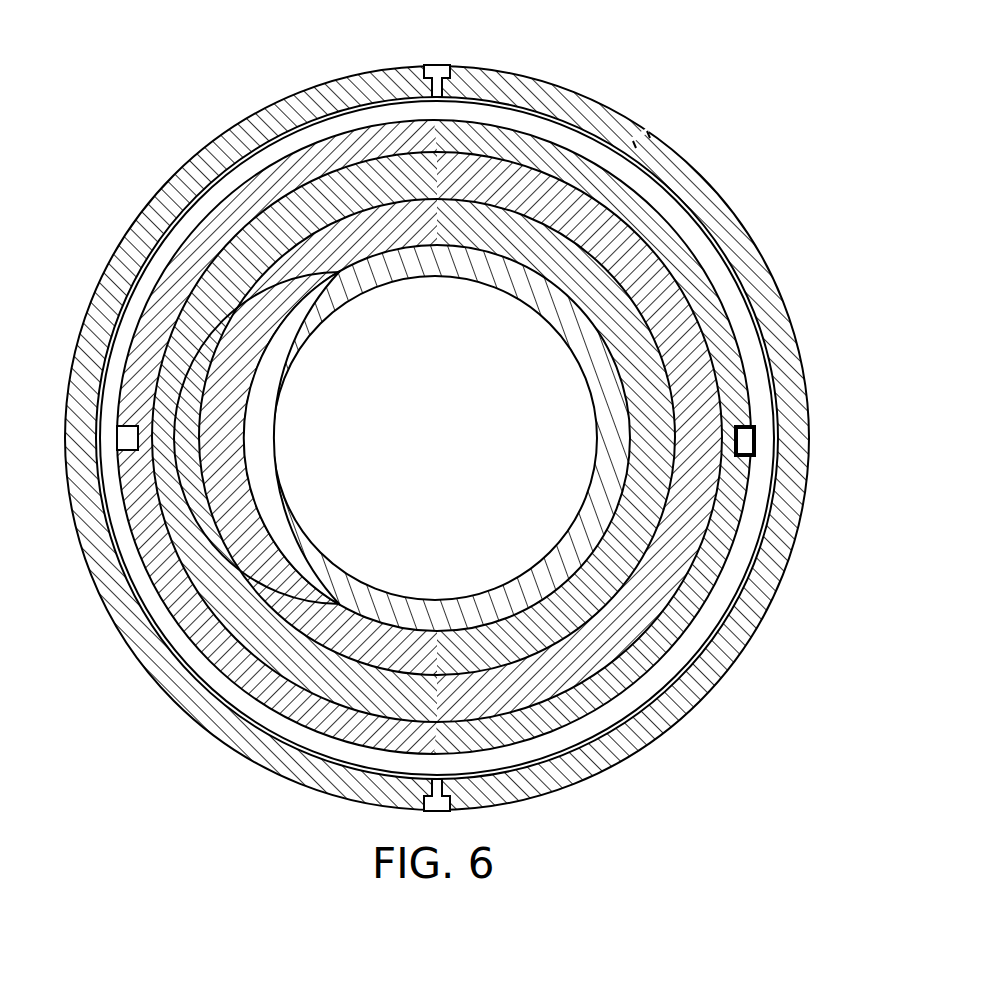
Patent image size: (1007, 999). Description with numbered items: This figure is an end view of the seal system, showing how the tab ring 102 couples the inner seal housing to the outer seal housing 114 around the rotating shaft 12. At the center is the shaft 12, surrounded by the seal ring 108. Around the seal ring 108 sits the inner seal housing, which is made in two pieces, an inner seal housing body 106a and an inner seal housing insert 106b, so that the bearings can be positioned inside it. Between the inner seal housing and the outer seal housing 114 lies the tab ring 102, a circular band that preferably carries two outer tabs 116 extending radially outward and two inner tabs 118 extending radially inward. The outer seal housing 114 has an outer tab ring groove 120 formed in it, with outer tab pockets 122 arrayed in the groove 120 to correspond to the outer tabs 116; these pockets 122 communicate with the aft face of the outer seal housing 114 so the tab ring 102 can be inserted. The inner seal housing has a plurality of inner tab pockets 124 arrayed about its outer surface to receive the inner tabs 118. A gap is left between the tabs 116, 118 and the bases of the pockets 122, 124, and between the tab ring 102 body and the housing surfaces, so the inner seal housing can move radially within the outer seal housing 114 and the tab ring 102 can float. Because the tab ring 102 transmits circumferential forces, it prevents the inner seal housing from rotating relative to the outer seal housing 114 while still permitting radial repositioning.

The rotating shaft 12 is at (280, 355).
The tab ring 102 is at (480, 122).
The inner seal housing body 106a is at (552, 168).
The inner seal housing insert 106b is at (672, 290).
The seal ring 108 is at (612, 318).
The outer seal housing 114 is at (310, 100).
The outer tabs 116 is at (437, 100).
The inner tabs 118 is at (748, 400).
The outer tab ring groove 120 is at (645, 150).
The outer tab pockets 122 is at (430, 85).
The inner tab pockets 124 is at (755, 458).